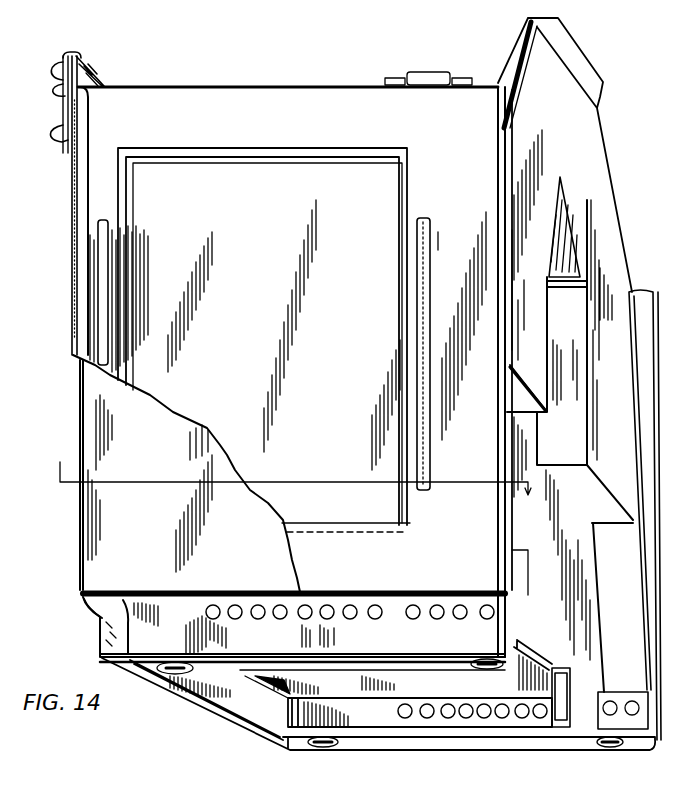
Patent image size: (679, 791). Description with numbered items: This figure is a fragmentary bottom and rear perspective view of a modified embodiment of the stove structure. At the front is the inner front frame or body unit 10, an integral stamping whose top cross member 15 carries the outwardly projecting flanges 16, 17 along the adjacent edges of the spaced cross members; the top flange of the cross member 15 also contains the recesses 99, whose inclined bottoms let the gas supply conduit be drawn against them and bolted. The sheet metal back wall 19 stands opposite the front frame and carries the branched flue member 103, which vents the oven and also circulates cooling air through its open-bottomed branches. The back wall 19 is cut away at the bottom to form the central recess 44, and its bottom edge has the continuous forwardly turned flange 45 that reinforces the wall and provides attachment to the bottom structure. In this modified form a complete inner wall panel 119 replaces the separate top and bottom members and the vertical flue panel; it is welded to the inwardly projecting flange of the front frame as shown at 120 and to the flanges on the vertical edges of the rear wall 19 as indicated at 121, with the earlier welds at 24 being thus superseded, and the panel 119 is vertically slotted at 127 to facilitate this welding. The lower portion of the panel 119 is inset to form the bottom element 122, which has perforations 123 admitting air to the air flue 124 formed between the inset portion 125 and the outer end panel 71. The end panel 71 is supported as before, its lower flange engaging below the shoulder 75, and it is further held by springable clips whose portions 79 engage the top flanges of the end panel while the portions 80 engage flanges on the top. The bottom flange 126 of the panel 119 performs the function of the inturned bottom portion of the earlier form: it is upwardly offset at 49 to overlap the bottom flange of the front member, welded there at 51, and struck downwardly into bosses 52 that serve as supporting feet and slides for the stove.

The frame or body unit 10 is at (80, 180).
The cross member 15 is at (83, 62).
The outwardly projecting flange 16 is at (60, 141).
The outwardly projecting flange 17 is at (56, 80).
The back wall 19 is at (530, 532).
The weld 24 is at (115, 622).
The central recess 44 is at (558, 663).
The forwardly turned flange 45 is at (545, 657).
The upward offset 49 is at (282, 728).
The weld 51 is at (118, 667).
The downward bosses 52 is at (172, 677).
The end panel 71 is at (652, 328).
The shoulder 75 is at (405, 603).
The clip portion 79 is at (394, 77).
The clip portion 80 is at (429, 72).
The recess 99 is at (102, 72).
The flue member 103 is at (615, 199).
The inner wall panel 119 is at (305, 97).
The weld 120 is at (78, 308).
The weld 121 is at (450, 170).
The bottom element 122 is at (143, 633).
The perforations 123 is at (236, 604).
The air flue 124 is at (212, 157).
The inset portion 125 is at (160, 165).
The bottom flange 126 is at (205, 673).
The vertical slots 127 is at (108, 267).